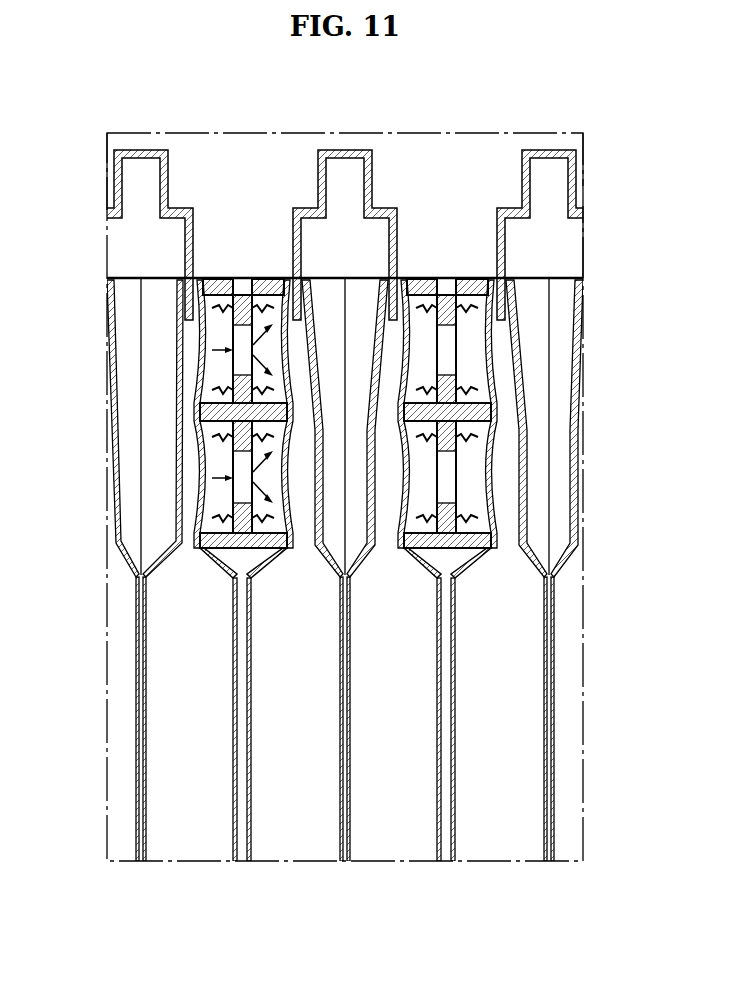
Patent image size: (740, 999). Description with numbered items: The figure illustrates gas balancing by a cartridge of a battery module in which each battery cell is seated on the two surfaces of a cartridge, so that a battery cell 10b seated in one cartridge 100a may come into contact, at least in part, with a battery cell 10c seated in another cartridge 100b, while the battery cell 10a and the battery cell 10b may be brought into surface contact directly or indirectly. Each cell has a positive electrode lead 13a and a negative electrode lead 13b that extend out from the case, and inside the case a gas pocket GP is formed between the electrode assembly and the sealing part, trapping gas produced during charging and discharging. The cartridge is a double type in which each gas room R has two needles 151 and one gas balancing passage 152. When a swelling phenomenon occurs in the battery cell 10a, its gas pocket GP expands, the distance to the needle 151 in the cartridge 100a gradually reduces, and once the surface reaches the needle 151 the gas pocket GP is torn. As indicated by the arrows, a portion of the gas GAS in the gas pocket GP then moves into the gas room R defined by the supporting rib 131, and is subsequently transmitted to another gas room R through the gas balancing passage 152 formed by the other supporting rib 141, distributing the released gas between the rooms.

The supporting rib 131 is at (210, 282).
The supporting rib 141 is at (277, 282).
The positive electrode lead 13a is at (314, 336).
The negative electrode lead 13b is at (373, 336).
The needle 151 is at (533, 410).
The gas balancing passage 152 is at (543, 414).
The battery cell 10a is at (172, 744).
The battery cell 10b is at (315, 744).
The battery cell 10c is at (465, 744).
The cartridge 100a is at (242, 856).
The cartridge 100b is at (447, 747).
The gas room R is at (212, 336).
The gas GAS is at (213, 350).
The gas pocket GP is at (49, 460).